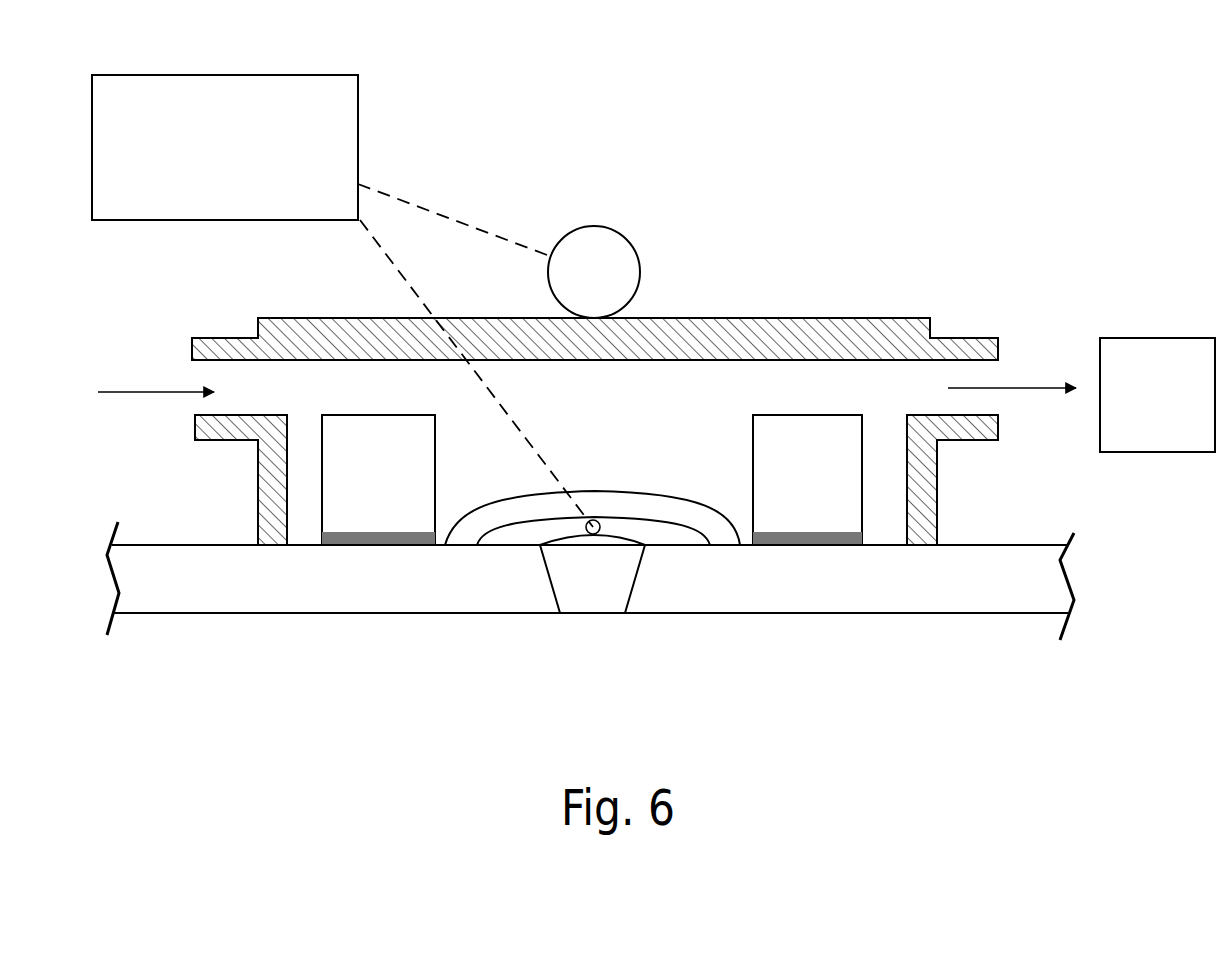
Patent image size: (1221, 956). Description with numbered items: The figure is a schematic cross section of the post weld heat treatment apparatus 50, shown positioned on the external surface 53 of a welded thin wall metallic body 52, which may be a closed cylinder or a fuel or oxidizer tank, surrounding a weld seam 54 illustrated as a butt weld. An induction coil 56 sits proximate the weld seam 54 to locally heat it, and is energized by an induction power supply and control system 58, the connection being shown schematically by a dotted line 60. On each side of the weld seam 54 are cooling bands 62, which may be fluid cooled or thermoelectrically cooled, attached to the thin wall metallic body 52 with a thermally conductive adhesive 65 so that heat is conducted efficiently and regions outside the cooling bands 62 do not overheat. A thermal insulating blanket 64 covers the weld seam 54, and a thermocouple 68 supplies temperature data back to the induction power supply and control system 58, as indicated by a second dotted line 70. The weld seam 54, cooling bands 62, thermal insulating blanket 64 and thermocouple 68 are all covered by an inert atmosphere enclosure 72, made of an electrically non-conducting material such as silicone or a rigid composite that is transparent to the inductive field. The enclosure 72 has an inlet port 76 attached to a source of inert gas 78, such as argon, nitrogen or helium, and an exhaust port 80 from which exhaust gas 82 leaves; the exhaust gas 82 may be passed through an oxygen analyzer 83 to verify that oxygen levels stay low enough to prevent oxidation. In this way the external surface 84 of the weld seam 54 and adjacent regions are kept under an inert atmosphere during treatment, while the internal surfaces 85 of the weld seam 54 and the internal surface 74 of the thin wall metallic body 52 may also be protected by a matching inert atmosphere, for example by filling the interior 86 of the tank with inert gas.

The post weld heat treatment apparatus 50 is at (851, 172).
The welded thin wall metallic body 52 is at (873, 597).
The external surface 53 is at (982, 545).
The weld seam 54 is at (593, 585).
The induction coil 56 is at (612, 250).
The induction power supply and control system 58 is at (225, 147).
The dotted line 60 is at (418, 208).
The cooling bands 62 is at (377, 435).
The thermal insulating blanket 64 is at (520, 510).
The thermally conductive adhesive 65 is at (380, 540).
The thermocouple 68 is at (597, 520).
The dotted line 70 is at (402, 273).
The inert atmosphere enclosure 72 is at (832, 314).
The internal surface 74 is at (675, 613).
The inlet port 76 is at (230, 333).
The inert gas 78 is at (148, 392).
The exhaust port 80 is at (972, 338).
The exhaust gas 82 is at (1023, 388).
The oxygen analyzer 83 is at (1157, 395).
The external surface of weld seam 84 is at (628, 545).
The internal surfaces of weld seam 85 is at (612, 613).
The interior 86 is at (641, 693).